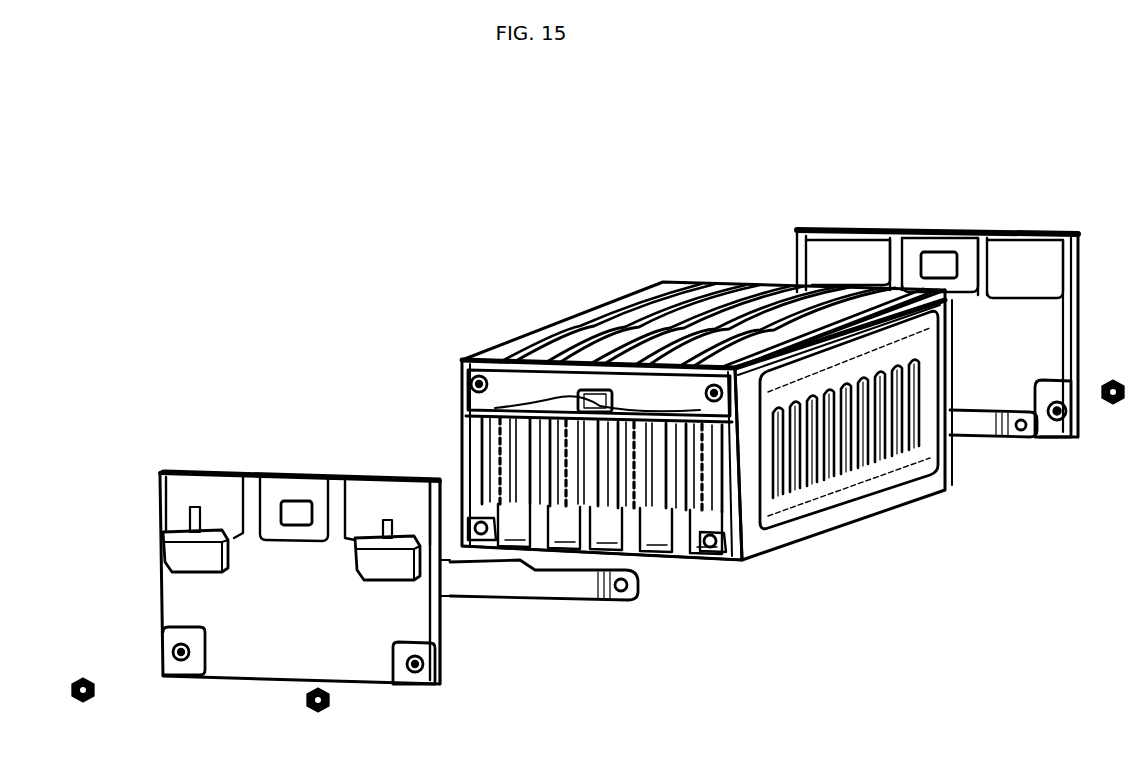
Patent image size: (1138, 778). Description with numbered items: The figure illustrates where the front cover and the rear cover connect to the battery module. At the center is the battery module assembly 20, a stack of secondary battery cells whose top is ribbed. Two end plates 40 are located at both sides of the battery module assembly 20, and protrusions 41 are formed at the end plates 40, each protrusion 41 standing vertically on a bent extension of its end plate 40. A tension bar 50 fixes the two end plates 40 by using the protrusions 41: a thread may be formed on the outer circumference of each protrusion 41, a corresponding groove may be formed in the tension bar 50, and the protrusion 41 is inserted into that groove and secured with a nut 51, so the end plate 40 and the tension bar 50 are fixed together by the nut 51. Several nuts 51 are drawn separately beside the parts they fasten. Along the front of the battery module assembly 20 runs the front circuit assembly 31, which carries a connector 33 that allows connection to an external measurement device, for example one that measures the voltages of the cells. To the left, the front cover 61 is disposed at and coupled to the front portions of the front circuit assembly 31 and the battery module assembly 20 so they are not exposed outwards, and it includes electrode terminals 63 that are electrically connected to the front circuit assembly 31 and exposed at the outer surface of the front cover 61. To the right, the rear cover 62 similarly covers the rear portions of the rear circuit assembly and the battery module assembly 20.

The battery module assembly 20 is at (680, 283).
The front circuit assembly 31 is at (535, 402).
The connector 33 is at (592, 390).
The end plate 40 is at (918, 492).
The protrusion 41 is at (476, 536).
The tension bar 50 is at (466, 380).
The nut 51 is at (84, 678).
The front cover 61 is at (192, 470).
The rear cover 62 is at (1040, 232).
The electrode terminal 63 is at (188, 512).